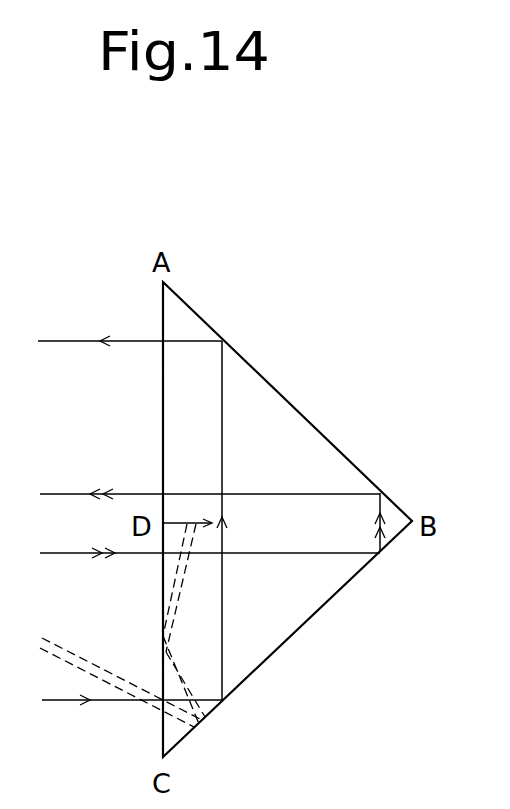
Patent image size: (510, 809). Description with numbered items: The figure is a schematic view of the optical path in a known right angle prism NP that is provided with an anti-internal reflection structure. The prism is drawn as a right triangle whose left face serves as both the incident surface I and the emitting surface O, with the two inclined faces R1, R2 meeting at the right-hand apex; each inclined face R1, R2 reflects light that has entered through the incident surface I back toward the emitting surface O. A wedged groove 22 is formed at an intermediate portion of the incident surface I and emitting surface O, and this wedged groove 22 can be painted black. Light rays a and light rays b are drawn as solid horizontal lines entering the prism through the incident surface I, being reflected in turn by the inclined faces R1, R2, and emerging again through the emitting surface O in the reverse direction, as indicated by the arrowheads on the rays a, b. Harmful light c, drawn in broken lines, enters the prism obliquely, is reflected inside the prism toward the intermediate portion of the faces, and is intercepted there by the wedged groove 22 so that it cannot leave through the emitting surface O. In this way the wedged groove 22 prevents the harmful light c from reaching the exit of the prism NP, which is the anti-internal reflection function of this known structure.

The wedged groove 22 is at (163, 523).
The first reflecting surface R1 is at (308, 623).
The second reflecting surface R2 is at (295, 407).
The right angle prism NP is at (372, 452).
The emitting surface O is at (162, 400).
The incident surface I is at (163, 602).
The light ray a is at (60, 494).
The light ray b is at (57, 341).
The harmful light c is at (68, 643).